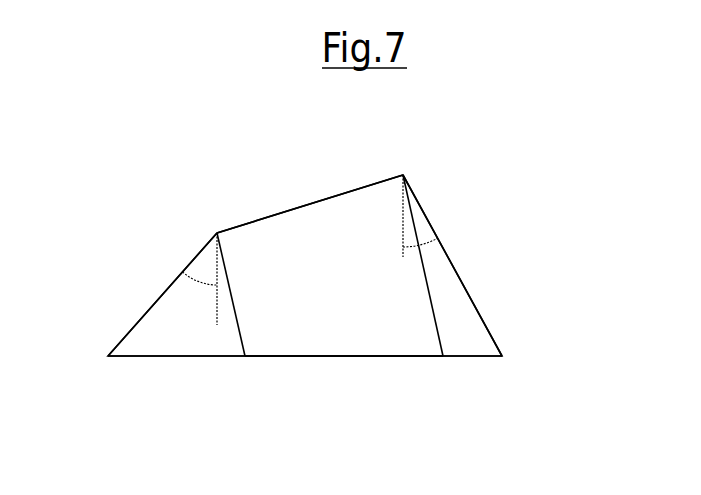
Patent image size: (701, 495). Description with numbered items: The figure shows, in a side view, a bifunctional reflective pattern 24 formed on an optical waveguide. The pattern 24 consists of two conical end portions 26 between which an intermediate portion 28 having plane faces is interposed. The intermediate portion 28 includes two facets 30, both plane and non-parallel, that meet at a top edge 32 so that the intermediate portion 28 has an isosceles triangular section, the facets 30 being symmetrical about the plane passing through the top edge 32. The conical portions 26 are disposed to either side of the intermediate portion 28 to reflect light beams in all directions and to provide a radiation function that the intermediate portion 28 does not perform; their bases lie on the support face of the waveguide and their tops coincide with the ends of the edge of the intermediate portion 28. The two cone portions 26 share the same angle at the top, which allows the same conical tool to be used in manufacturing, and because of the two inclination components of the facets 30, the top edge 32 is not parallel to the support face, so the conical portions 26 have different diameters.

The bifunctional reflective pattern 24 is at (93, 288).
The conical end portions 26 is at (146, 347).
The intermediate portion 28 is at (296, 307).
The facets 30 is at (355, 326).
The top edge 32 is at (265, 215).